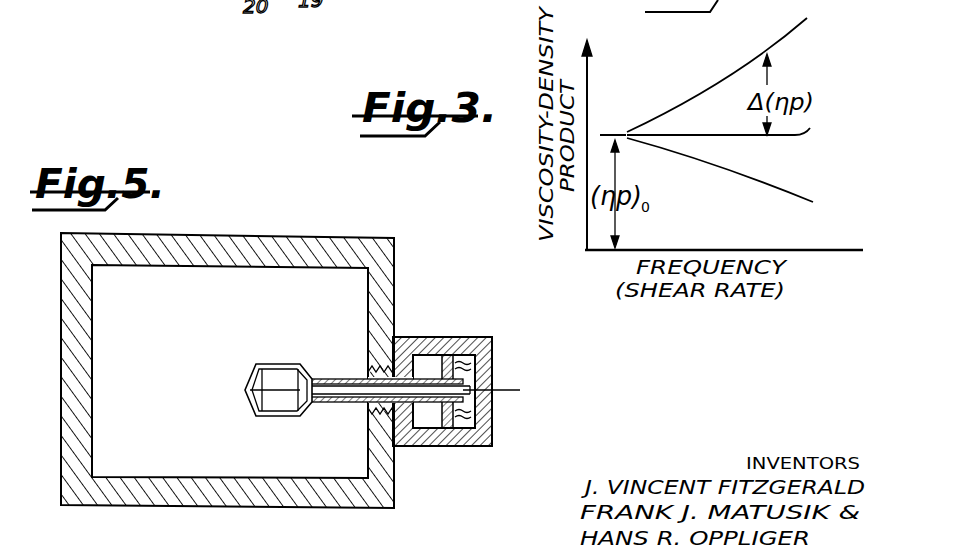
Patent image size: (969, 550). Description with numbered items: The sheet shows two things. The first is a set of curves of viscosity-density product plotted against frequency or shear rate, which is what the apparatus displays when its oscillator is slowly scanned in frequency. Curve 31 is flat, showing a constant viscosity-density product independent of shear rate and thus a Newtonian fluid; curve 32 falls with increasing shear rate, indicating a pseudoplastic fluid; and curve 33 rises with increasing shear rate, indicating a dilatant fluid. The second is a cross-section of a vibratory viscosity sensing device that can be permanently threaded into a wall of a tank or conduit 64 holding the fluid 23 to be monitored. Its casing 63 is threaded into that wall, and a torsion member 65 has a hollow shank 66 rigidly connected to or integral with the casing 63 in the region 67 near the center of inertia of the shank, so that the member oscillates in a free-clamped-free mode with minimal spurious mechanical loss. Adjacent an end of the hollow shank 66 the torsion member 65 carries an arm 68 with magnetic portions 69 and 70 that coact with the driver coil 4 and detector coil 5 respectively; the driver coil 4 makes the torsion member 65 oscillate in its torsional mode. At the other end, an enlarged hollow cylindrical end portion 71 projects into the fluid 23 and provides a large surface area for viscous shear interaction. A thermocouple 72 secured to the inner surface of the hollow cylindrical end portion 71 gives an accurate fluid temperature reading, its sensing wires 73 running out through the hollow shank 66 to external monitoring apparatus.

In FIG. 5, the driver coil 4 is at (456, 372).
In FIG. 5, the detector coil 5 is at (466, 428).
In FIG. 5, the fluid 23 is at (210, 322).
In FIG. 3, the curve 31 is at (810, 128).
In FIG. 3, the curve 32 is at (790, 190).
In FIG. 3, the curve 33 is at (792, 30).
In FIG. 5, the casing 63 is at (405, 340).
In FIG. 5, the tank or conduit 64 is at (250, 233).
In FIG. 5, the torsion member 65 is at (330, 379).
In FIG. 5, the hollow shank 66 is at (326, 403).
In FIG. 5, the region 67 is at (378, 412).
In FIG. 5, the arm 68 is at (476, 362).
In FIG. 5, the magnetic portion 69 is at (440, 362).
In FIG. 5, the magnetic portion 70 is at (432, 446).
In FIG. 5, the hollow cylindrical end portion 71 is at (268, 416).
In FIG. 5, the thermocouple 72 is at (258, 386).
In FIG. 5, the sensing wires 73 is at (505, 390).